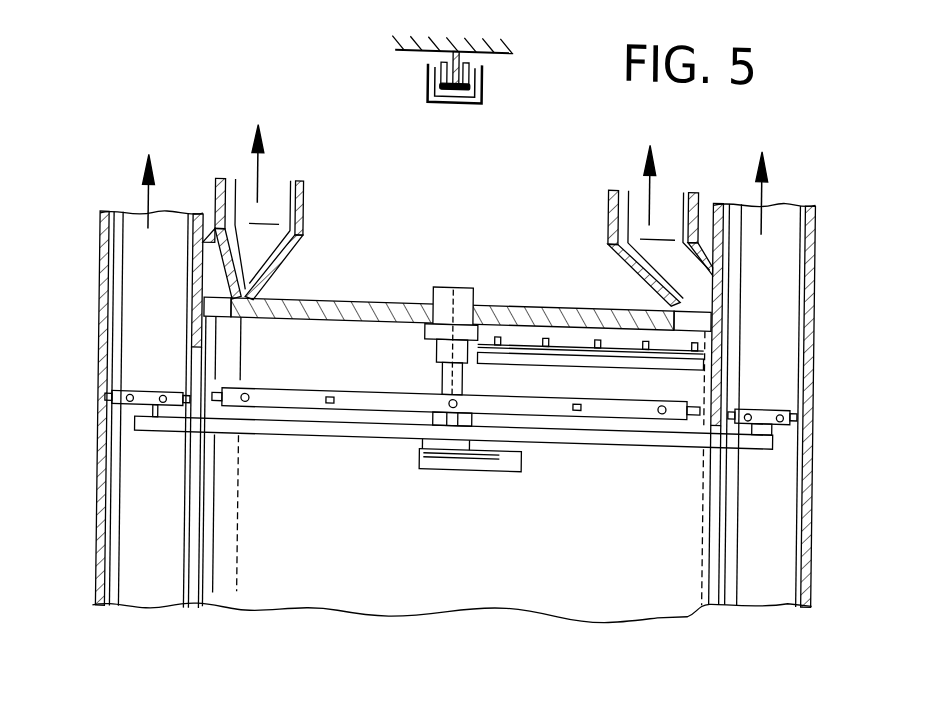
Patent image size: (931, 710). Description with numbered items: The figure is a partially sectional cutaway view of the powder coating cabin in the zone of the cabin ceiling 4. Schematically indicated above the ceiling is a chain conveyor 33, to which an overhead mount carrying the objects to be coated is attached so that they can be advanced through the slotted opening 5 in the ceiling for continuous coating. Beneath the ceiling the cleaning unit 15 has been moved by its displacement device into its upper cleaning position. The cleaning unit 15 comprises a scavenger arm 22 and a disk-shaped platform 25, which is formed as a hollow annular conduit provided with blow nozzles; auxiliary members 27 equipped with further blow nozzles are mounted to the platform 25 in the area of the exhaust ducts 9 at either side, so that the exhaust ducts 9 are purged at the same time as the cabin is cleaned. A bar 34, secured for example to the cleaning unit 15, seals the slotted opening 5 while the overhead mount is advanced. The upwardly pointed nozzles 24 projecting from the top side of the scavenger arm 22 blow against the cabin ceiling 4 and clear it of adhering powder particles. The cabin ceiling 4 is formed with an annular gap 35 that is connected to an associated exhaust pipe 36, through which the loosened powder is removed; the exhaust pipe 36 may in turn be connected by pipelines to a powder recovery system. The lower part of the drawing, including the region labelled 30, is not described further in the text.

The cabin ceiling 4 is at (391, 304).
The slotted opening 5 is at (492, 338).
The exhaust ducts 9 is at (146, 503).
The cleaning unit 15 is at (513, 406).
The scavenger arm 22 is at (614, 352).
The upwardly pointed blow nozzles 24 is at (504, 340).
The platform 25 is at (352, 413).
The auxiliary members 27 is at (145, 401).
The drive housing 30 is at (483, 545).
The chain conveyor 33 is at (453, 103).
The bar 34 is at (443, 288).
The annular gap 35 is at (213, 307).
The exhaust pipe 36 is at (278, 212).